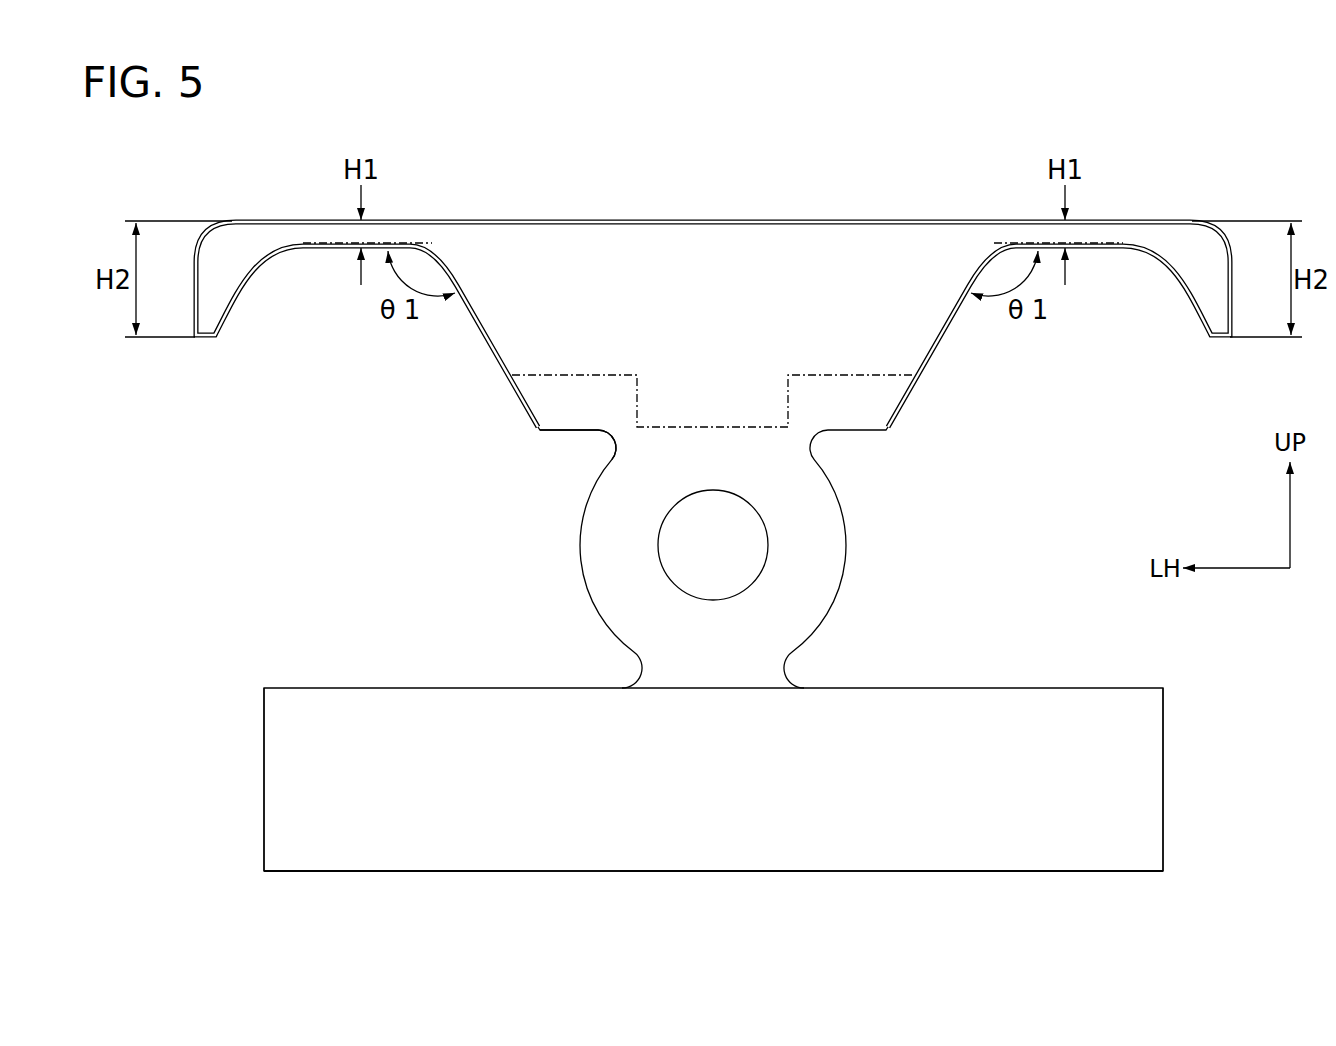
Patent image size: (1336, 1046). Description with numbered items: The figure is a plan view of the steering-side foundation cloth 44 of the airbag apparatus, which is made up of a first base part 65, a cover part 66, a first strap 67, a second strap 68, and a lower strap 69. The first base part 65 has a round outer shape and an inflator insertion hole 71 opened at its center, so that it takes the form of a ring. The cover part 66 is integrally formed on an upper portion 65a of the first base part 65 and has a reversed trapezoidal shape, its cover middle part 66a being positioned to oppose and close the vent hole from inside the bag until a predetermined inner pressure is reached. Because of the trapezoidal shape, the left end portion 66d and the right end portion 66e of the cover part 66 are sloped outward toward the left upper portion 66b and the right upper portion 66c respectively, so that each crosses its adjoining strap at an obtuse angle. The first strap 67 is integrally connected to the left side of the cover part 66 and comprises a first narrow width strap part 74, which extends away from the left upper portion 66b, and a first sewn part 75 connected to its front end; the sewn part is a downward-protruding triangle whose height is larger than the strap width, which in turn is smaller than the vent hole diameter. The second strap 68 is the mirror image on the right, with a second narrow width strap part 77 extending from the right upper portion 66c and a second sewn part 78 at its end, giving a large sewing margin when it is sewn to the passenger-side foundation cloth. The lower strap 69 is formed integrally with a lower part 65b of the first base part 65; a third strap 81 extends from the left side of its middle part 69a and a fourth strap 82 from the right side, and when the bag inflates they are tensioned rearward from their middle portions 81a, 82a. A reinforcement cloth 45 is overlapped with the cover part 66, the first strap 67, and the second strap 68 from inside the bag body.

The steering-side foundation cloth 44 is at (810, 217).
The reinforcement cloth 45 is at (598, 220).
The first base part 65 is at (830, 545).
The upper portion of the first base part 65a is at (713, 410).
The lower part of the first base part 65b is at (712, 690).
The cover part 66 is at (713, 240).
The cover middle part 66a is at (713, 298).
The left upper portion of the cover part 66b is at (440, 240).
The right upper portion of the cover part 66c is at (980, 240).
The left end portion of the cover part 66d is at (488, 340).
The right end portion of the cover part 66e is at (940, 340).
The first strap 67 is at (250, 377).
The second strap 68 is at (1054, 377).
The lower strap 69 is at (698, 837).
The middle part of the lower strap 69a is at (727, 817).
The inflator insertion hole 71 is at (672, 553).
The first narrow width strap part 74 is at (378, 232).
The first sewn part 75 is at (212, 302).
The second narrow width strap part 77 is at (1048, 232).
The second sewn part 78 is at (1215, 302).
The third strap 81 is at (350, 835).
The middle portion of the third strap 81a is at (440, 835).
The fourth strap 82 is at (1075, 835).
The middle portion of the fourth strap 82a is at (988, 835).